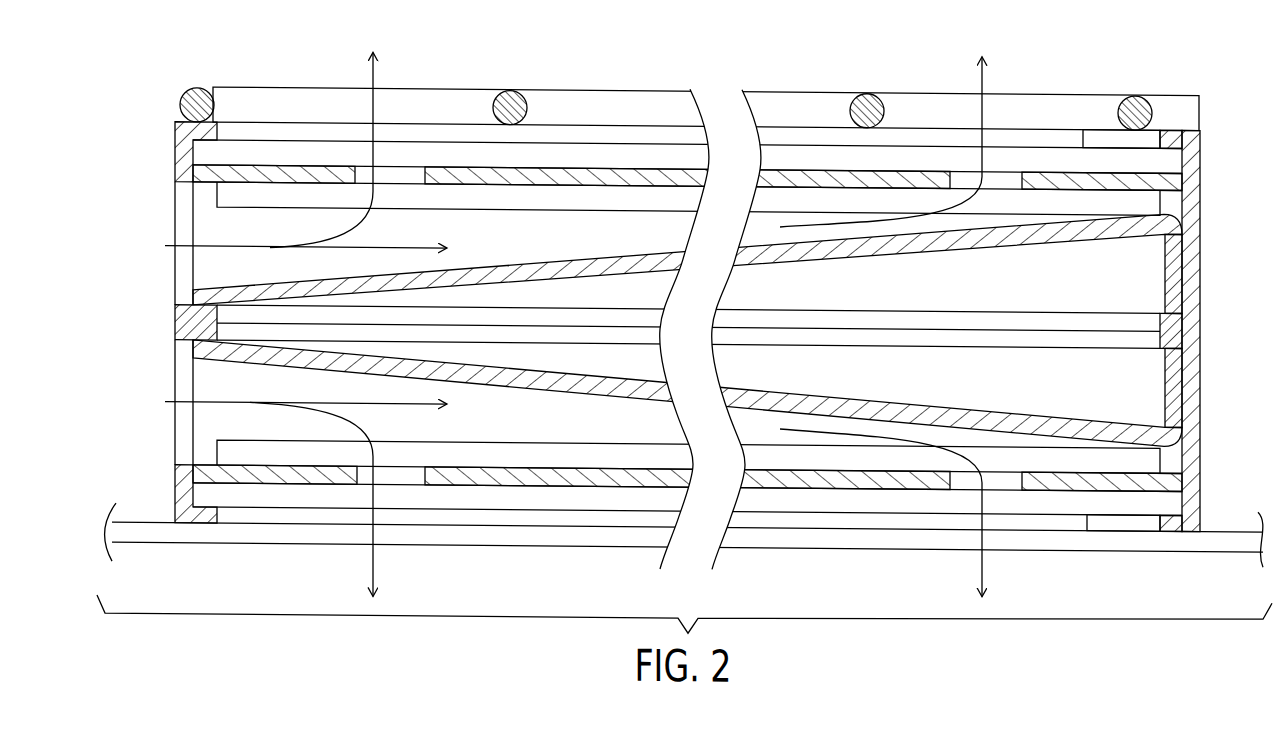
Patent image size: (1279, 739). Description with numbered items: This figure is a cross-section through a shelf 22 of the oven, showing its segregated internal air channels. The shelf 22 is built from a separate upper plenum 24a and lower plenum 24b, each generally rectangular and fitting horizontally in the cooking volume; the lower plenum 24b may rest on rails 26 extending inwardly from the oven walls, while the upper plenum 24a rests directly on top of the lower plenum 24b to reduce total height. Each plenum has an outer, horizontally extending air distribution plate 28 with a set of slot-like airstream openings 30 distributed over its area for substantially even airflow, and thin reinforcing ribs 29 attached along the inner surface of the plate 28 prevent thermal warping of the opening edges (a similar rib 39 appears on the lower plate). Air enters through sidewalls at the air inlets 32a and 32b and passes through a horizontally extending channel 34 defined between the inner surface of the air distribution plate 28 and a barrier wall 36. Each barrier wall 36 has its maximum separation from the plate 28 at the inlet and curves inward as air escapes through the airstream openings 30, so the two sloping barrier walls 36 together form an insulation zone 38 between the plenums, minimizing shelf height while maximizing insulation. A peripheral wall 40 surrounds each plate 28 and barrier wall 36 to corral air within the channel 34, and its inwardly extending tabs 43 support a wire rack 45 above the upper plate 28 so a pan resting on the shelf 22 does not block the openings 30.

The shelf 22 is at (1218, 318).
The upper plenum 24a is at (1218, 193).
The lower plenum 24b is at (1217, 421).
The rails 26 is at (160, 535).
The air distribution plate 28 is at (298, 170).
The reinforcing ribs 29 is at (220, 193).
The airstream openings 30 is at (390, 175).
The air inlet 32a is at (160, 253).
The air inlet 32b is at (160, 423).
The channel 34 is at (469, 244).
The barrier wall 36 is at (240, 285).
The insulation zone 38 is at (1034, 272).
The lower spacer layer 39 is at (225, 453).
The peripheral wall 40 is at (1200, 184).
The tabs 43 is at (176, 124).
The wire rack 45 is at (196, 90).